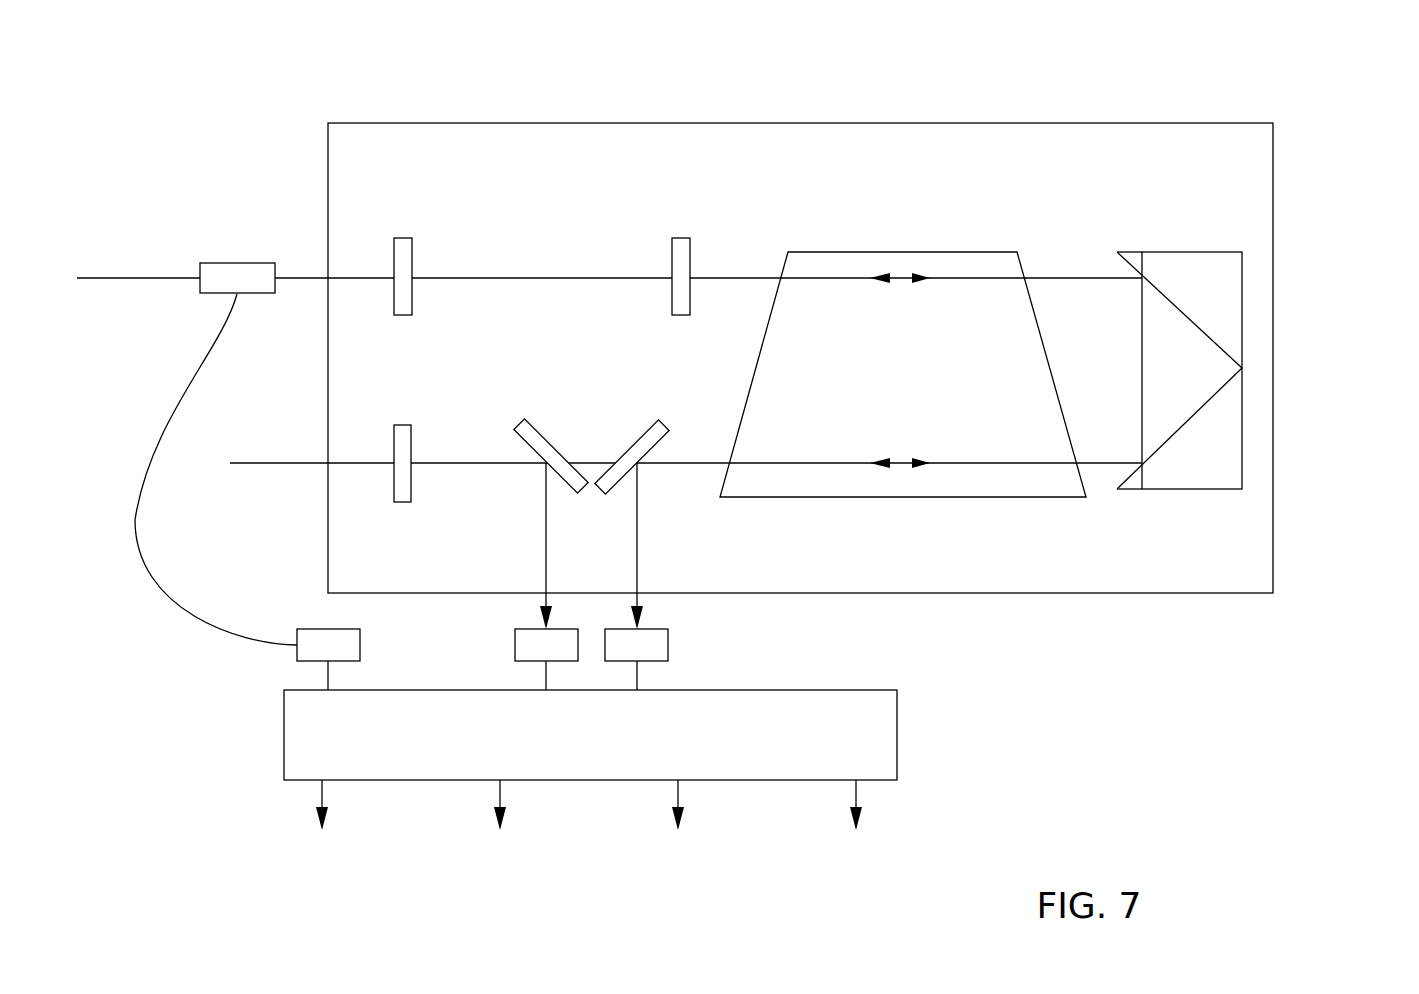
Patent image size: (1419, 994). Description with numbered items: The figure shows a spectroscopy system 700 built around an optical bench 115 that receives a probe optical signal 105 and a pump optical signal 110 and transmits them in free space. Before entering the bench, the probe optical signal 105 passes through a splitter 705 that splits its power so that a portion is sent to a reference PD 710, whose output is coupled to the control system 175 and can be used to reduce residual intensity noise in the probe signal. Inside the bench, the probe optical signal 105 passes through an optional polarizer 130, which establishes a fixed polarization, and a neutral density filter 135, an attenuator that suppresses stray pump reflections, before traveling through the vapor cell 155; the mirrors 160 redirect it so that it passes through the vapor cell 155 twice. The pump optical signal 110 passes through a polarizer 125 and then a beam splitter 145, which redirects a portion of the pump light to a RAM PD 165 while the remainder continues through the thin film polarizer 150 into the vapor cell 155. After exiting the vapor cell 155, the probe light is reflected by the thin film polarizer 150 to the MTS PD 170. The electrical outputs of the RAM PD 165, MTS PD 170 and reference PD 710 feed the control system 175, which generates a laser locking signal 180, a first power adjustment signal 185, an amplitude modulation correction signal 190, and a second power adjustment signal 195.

The spectroscopy system 700 is at (1176, 83).
The optical bench 115 is at (1255, 158).
The probe optical signal 105 is at (101, 277).
The pump optical signal 110 is at (253, 464).
The splitter 705 is at (244, 262).
The polarizer 130 is at (403, 237).
The neutral density filter 135 is at (681, 237).
The polarizer 125 is at (403, 503).
The beam splitter 145 is at (547, 436).
The thin film polarizer 150 is at (647, 420).
The vapor cell 155 is at (880, 398).
The mirrors 160 is at (1118, 520).
The reference photodiode 710 is at (296, 657).
The residual amplitude modulation photodiode 165 is at (514, 644).
The MTS photodiode 170 is at (668, 645).
The control system 175 is at (575, 759).
The laser locking signal 180 is at (321, 855).
The first power adjustment signal 185 is at (500, 855).
The amplitude modulation correction signal 190 is at (678, 855).
The second power adjustment signal 195 is at (856, 855).